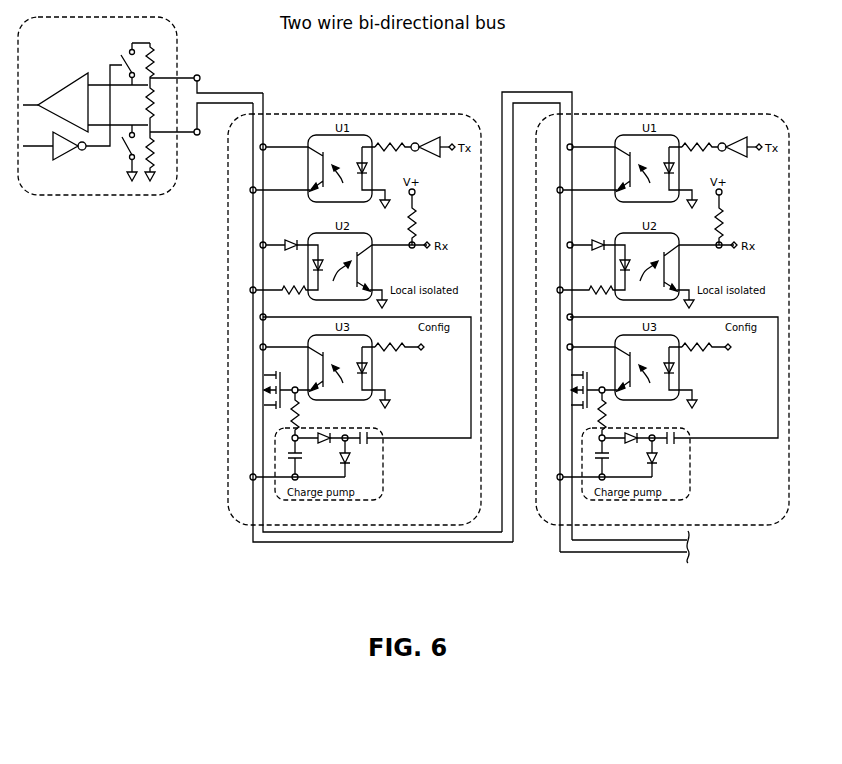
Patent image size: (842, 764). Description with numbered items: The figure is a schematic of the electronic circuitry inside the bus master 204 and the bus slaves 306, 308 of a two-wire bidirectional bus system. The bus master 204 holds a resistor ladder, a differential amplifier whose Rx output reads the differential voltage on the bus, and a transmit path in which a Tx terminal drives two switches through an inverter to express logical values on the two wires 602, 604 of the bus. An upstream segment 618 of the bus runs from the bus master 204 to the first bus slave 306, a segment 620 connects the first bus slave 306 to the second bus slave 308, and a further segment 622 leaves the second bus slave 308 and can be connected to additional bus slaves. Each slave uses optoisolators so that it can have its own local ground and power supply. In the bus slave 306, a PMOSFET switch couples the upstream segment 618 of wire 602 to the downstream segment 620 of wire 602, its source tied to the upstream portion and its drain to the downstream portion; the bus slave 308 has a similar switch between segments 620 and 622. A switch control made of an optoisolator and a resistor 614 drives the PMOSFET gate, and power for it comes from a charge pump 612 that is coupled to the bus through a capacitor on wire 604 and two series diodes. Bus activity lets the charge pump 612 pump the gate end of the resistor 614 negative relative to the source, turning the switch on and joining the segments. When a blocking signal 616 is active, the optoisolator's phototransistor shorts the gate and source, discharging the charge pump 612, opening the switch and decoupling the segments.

The bus master 204 is at (98, 197).
The wire 602 is at (216, 92).
The wire 604 is at (226, 104).
The upstream segment 618 is at (262, 93).
The bus slave 306 is at (354, 292).
The bus slave 308 is at (662, 115).
The downstream segment 620 is at (545, 92).
The downstream segment 622 is at (611, 553).
The charge pump 612 is at (383, 482).
The resistor 614 is at (300, 424).
The blocking signal 616 is at (422, 350).